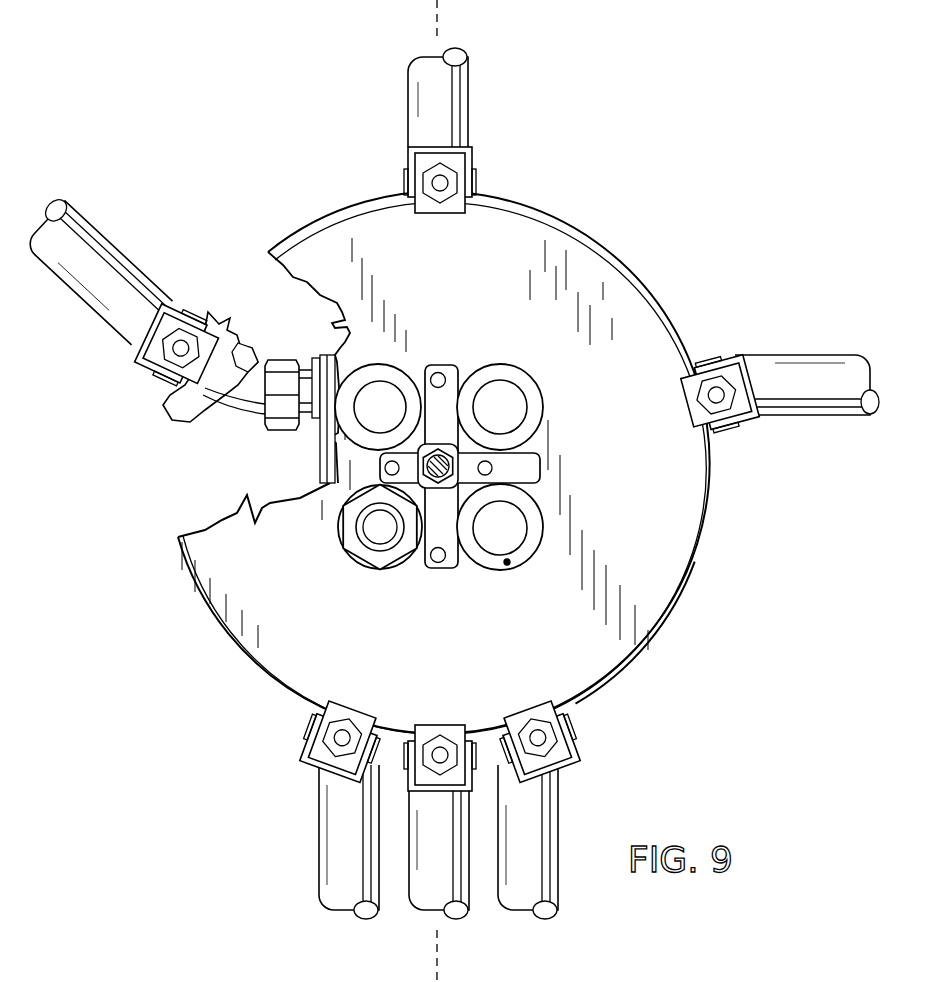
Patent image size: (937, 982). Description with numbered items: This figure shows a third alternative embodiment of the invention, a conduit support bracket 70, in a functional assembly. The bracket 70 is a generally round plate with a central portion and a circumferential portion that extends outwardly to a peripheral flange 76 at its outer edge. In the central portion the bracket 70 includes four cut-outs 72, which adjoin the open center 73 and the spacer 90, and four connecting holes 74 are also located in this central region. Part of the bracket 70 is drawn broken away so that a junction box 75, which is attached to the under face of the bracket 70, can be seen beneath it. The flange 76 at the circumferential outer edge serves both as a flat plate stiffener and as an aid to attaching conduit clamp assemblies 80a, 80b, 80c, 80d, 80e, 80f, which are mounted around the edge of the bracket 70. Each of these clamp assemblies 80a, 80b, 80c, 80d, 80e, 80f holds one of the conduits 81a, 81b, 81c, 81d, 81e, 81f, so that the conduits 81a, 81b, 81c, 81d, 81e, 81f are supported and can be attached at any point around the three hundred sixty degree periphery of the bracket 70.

The conduit support bracket 70 is at (603, 250).
The cut-outs 72 is at (372, 364).
The open center 73 is at (467, 437).
The connecting holes 74 is at (440, 372).
The junction box 75 is at (332, 352).
The peripheral flange 76 is at (688, 568).
The spacer 90 is at (420, 445).
The conduit clamp assembly 80a is at (152, 395).
The conduit clamp assembly 80b is at (716, 330).
The conduit clamp assembly 80c is at (598, 727).
The conduit clamp assembly 80d is at (286, 733).
The conduit clamp assembly 80e is at (484, 166).
The conduit clamp assembly 80f is at (440, 712).
The conduit 81a is at (87, 216).
The conduit 81b is at (838, 352).
The conduit 81c is at (560, 862).
The conduit 81d is at (318, 838).
The conduit 81e is at (468, 100).
The conduit 81f is at (418, 915).